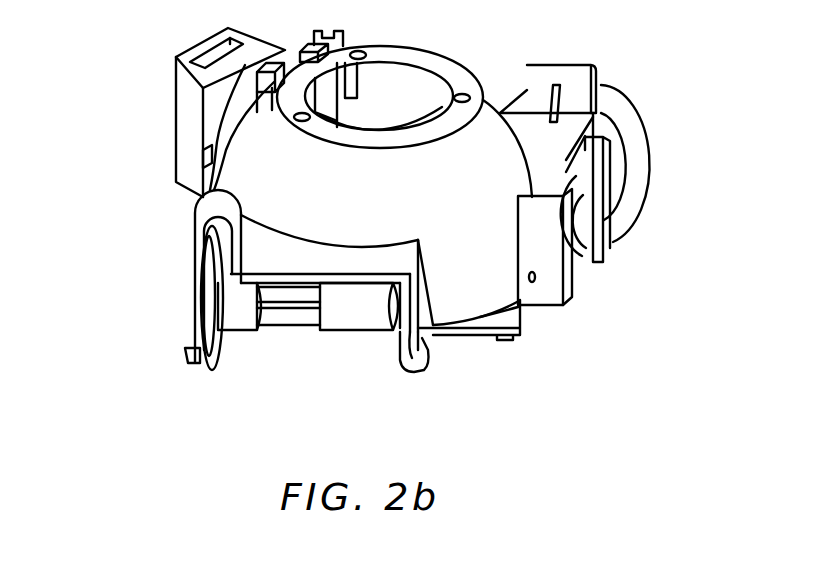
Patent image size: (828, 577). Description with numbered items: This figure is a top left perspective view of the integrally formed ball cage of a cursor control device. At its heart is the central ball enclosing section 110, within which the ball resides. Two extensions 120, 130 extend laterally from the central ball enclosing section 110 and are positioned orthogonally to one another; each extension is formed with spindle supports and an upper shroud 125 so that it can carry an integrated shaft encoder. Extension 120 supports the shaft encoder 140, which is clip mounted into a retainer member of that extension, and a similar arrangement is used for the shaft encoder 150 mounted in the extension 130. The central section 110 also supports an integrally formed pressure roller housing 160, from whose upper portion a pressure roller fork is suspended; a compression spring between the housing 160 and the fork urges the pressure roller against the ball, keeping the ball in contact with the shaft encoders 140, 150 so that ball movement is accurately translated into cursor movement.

The central ball enclosing section 110 is at (460, 208).
The extension 120 is at (422, 325).
The upper shroud 125 is at (195, 236).
The extension 130 is at (573, 280).
The shaft encoder 140 is at (223, 367).
The shaft encoder 150 is at (635, 193).
The pressure roller housing 160 is at (185, 65).